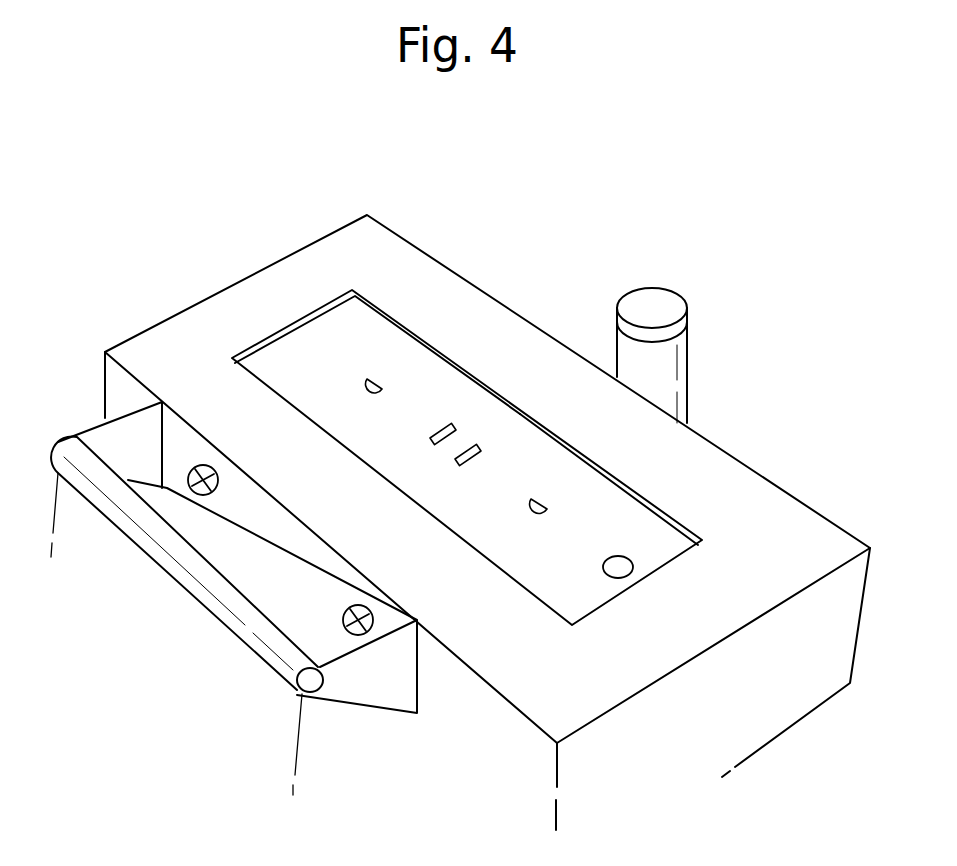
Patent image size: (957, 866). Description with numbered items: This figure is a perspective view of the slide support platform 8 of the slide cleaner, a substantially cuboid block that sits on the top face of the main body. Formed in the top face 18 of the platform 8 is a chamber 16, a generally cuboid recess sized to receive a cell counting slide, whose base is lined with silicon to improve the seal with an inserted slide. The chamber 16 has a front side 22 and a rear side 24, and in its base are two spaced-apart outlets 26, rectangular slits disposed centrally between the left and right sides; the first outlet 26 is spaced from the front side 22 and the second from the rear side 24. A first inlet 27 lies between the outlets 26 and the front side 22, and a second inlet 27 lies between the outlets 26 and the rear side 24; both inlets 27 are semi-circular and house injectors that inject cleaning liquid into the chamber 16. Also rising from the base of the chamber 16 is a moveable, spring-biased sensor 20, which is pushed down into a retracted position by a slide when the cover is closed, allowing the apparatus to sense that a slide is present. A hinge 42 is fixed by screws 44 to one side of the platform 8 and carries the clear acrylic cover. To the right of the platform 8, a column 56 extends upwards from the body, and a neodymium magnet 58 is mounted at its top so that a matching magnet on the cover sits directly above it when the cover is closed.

The platform 8 is at (150, 340).
The top face of the platform 18 is at (210, 313).
The chamber 16 is at (290, 348).
The rear side of the chamber 24 is at (340, 303).
The front side of the chamber 22 is at (672, 553).
The inlet 27 is at (380, 372).
The outlet 26 is at (445, 425).
The moveable sensor 20 is at (606, 576).
The neodymium magnet 58 is at (650, 288).
The column 56 is at (687, 355).
The hinge 42 is at (368, 707).
The screw 44 is at (195, 497).